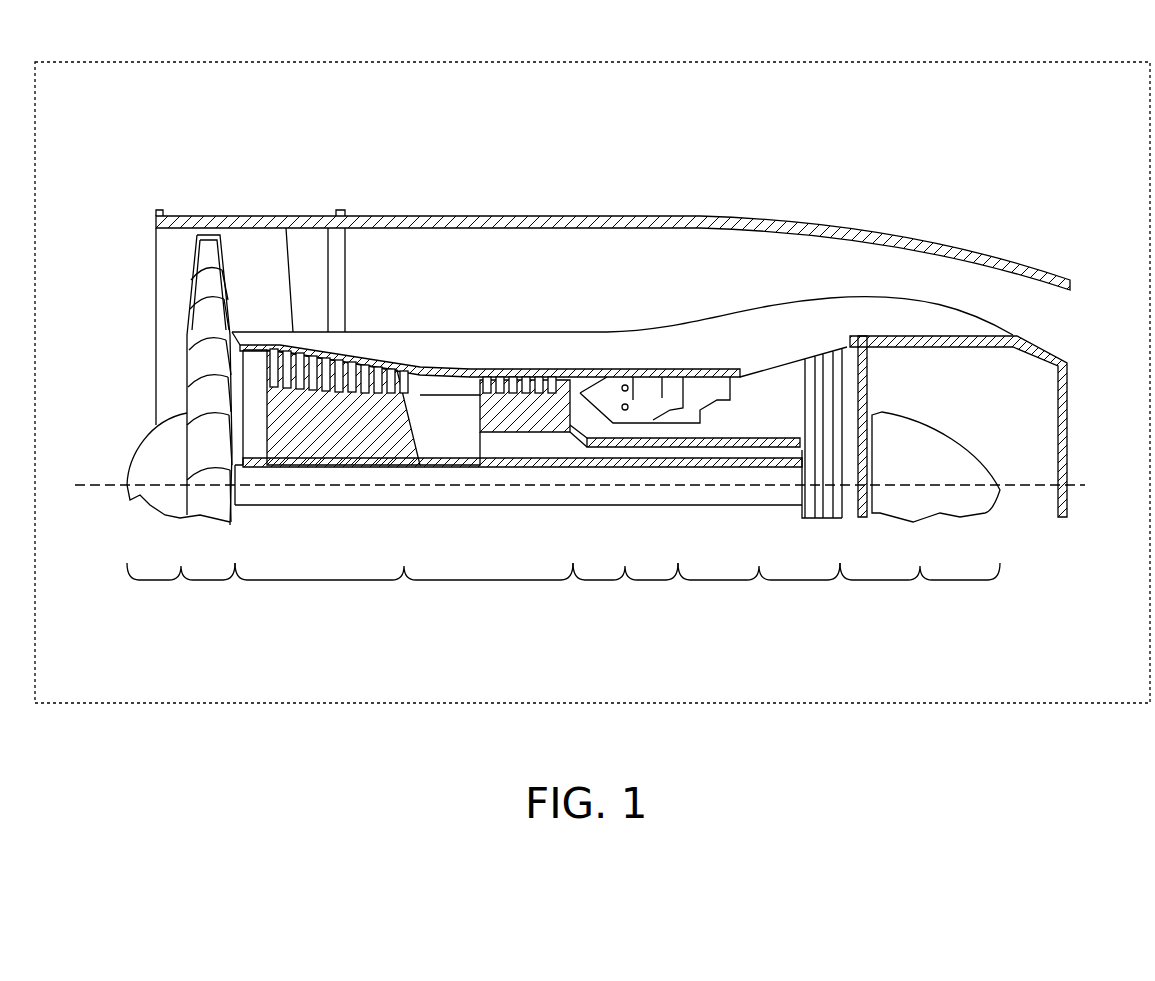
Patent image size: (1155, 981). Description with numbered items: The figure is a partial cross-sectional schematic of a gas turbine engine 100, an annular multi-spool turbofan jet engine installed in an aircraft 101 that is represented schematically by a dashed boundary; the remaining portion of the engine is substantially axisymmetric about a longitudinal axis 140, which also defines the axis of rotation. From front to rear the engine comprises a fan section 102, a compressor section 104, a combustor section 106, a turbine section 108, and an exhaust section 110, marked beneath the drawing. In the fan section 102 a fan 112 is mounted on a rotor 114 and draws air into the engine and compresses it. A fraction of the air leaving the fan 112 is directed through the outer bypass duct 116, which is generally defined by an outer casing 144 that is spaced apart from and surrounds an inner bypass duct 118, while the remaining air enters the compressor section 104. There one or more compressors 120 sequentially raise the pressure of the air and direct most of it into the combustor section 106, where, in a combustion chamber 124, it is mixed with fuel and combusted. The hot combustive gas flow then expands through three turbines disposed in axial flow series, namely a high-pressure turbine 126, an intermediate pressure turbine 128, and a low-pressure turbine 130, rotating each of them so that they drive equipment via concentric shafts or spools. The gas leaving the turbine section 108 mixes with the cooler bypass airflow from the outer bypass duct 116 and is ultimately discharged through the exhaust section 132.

The gas turbine engine 100 is at (183, 157).
The aircraft 101 is at (118, 62).
The fan section 102 is at (181, 594).
The compressor section 104 is at (404, 594).
The combustor section 106 is at (625, 594).
The turbine section 108 is at (759, 594).
The exhaust section 110 is at (920, 594).
The fan 112 is at (208, 323).
The rotor 114 is at (230, 507).
The outer bypass duct 116 is at (600, 243).
The inner bypass duct 118 is at (618, 340).
The compressor 120 is at (358, 435).
The combustion chamber 124 is at (695, 400).
The high-pressure turbine 126 is at (752, 398).
The intermediate pressure turbine 128 is at (788, 385).
The low-pressure turbine 130 is at (845, 352).
The exhaust section 132 is at (1040, 440).
The longitudinal axis 140 is at (88, 484).
The outer casing 144 is at (705, 222).